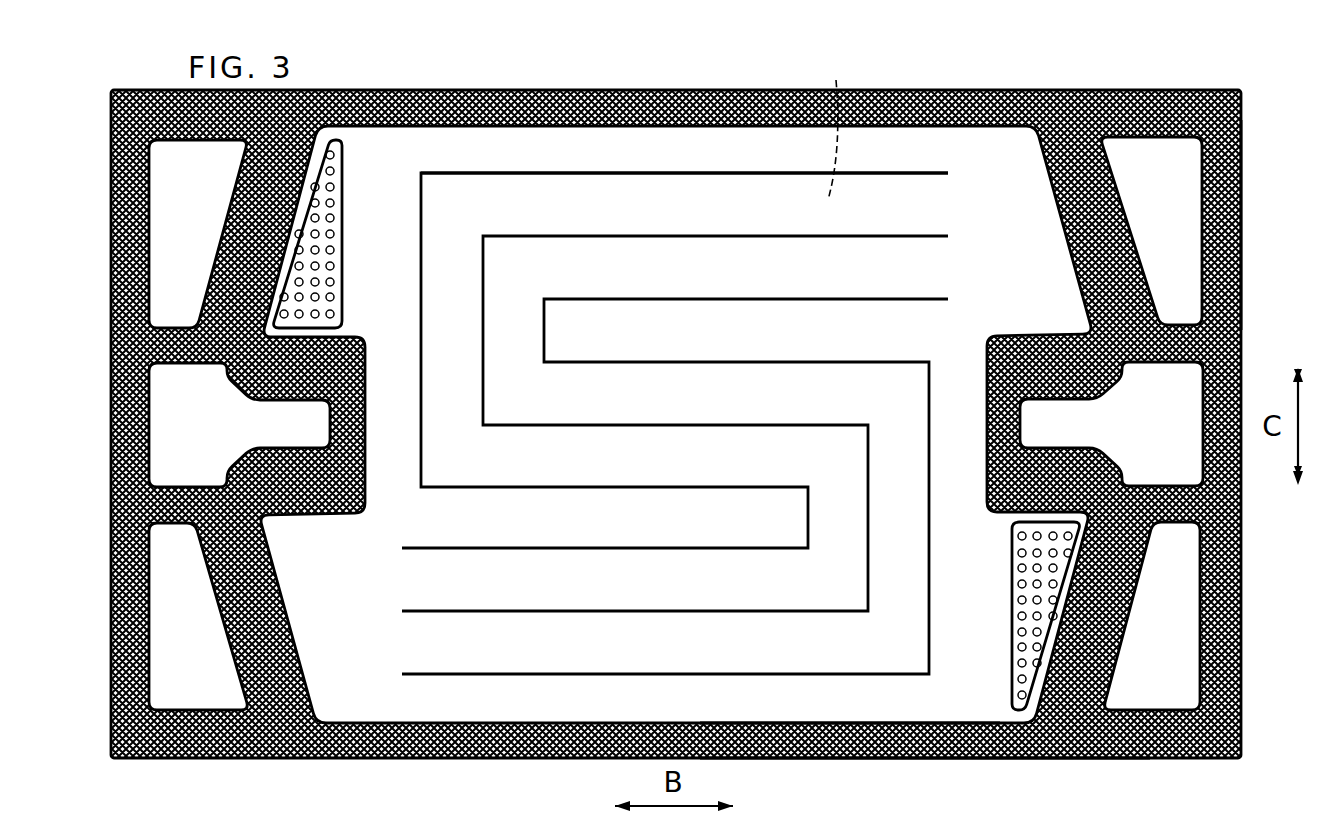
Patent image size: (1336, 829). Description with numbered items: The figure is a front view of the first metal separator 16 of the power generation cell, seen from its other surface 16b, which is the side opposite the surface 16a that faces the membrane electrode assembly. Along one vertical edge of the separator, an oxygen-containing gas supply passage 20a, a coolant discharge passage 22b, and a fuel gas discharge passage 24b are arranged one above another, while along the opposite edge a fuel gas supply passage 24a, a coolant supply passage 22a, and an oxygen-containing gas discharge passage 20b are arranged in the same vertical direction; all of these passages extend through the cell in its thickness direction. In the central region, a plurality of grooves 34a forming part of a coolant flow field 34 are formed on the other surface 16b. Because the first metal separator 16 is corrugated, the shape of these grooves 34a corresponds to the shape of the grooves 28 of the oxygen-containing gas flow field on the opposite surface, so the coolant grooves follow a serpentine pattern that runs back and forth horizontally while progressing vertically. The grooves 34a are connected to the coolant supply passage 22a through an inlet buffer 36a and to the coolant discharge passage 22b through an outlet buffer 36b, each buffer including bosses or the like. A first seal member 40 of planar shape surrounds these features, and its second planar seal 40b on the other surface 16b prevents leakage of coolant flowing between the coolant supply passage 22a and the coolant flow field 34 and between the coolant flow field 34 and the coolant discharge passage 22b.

The first metal separator 16 is at (985, 72).
The surface 16a is at (948, 757).
The other surface 16b is at (902, 747).
The oxygen-containing gas supply passage 20a is at (1152, 231).
The oxygen-containing gas discharge passage 20b is at (198, 616).
The coolant supply passage 22a is at (239, 425).
The coolant discharge passage 22b is at (1111, 424).
The fuel gas supply passage 24a is at (197, 234).
The fuel gas discharge passage 24b is at (1152, 616).
The grooves 28 is at (839, 129).
The coolant flow field 34 is at (594, 195).
The grooves 34a is at (745, 172).
The inlet buffer 36a is at (335, 263).
The outlet buffer 36b is at (1012, 615).
The first seal member 40 is at (1093, 132).
The second planar seal 40b is at (1241, 191).